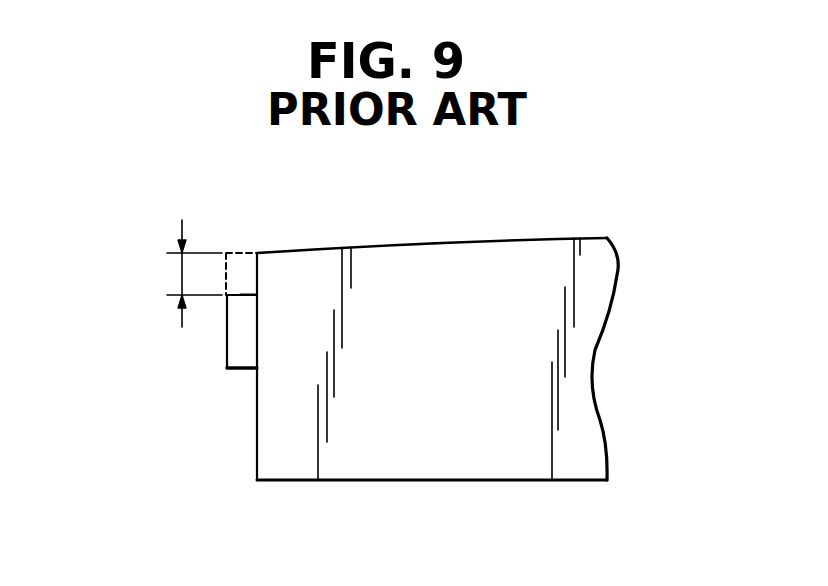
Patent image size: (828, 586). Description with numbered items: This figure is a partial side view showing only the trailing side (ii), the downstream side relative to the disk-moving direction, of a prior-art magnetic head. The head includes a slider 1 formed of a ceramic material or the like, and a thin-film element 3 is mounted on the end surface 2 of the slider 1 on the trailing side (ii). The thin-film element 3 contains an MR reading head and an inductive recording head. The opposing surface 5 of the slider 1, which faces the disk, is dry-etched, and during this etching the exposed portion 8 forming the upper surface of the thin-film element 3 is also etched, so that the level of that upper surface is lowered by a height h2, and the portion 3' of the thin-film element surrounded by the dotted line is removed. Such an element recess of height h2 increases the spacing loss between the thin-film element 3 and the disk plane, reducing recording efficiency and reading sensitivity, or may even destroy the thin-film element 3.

The slider 1 is at (487, 463).
The end surface 2 is at (257, 457).
The thin-film element 3 is at (204, 342).
The removed portion of the thin-film element 3' is at (236, 242).
The opposing surface 5 is at (480, 238).
The exposed portion 8 is at (240, 293).
The trailing side ii is at (251, 397).
The height of element recess h2 is at (181, 273).